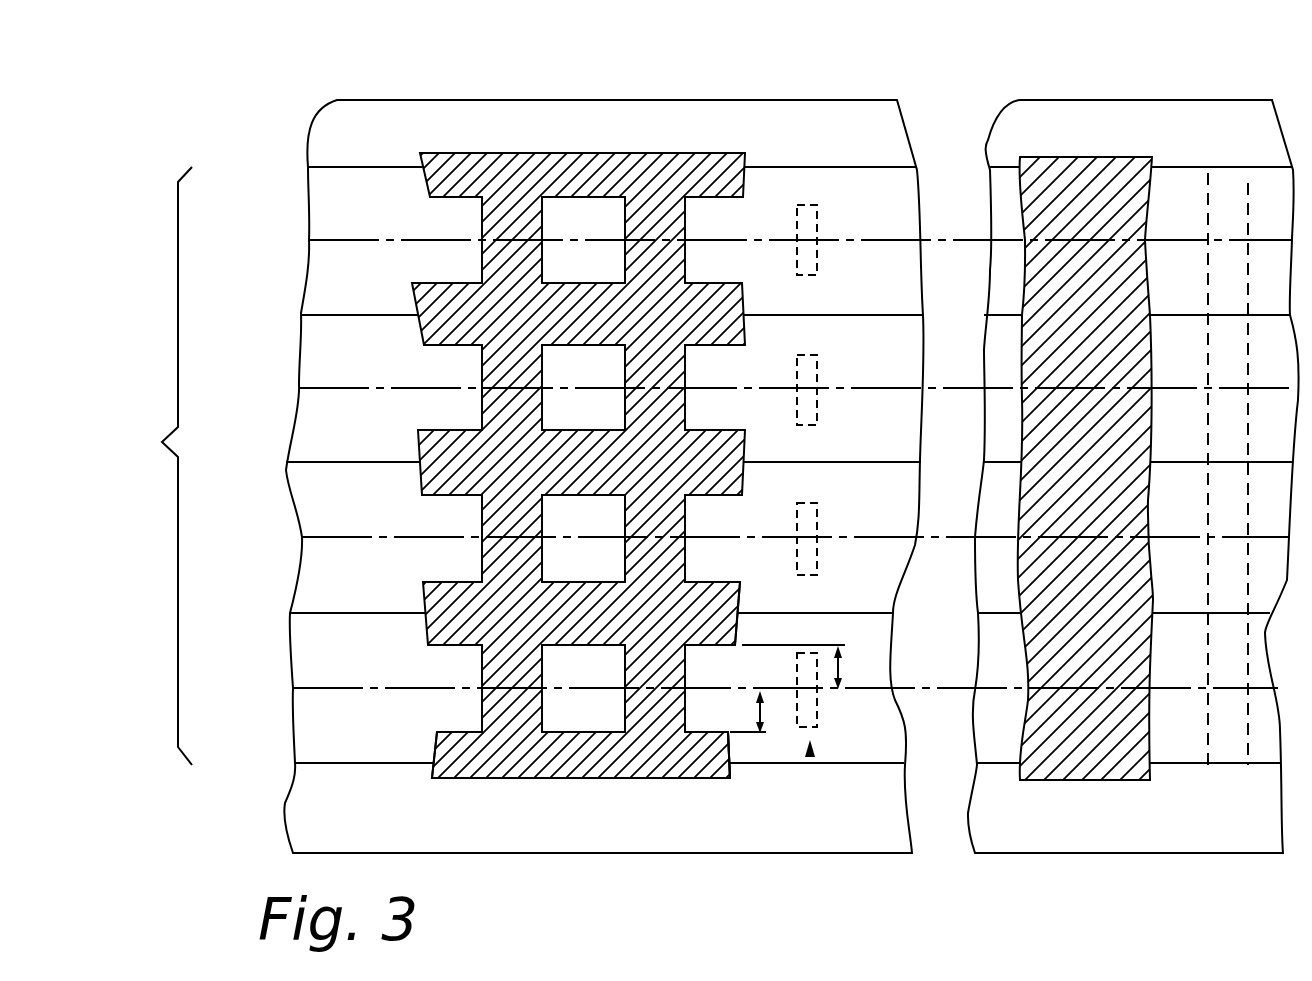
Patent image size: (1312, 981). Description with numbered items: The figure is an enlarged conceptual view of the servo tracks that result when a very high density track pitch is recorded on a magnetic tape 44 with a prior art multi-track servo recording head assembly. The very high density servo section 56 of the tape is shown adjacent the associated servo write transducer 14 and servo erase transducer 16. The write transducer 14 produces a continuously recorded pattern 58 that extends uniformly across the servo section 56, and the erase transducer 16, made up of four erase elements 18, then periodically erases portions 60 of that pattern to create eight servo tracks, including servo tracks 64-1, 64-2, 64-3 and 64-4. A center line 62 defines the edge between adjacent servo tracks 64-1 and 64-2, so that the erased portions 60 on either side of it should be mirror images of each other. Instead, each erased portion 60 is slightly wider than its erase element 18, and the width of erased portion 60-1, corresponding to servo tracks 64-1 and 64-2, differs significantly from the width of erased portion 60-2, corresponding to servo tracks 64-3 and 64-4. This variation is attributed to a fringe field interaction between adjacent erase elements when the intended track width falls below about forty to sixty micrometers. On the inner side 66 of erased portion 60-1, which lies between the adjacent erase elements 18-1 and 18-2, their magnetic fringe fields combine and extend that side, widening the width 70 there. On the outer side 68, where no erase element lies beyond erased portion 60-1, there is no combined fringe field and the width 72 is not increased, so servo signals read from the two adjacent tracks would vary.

The servo write transducer 14 is at (1201, 760).
The servo erase transducer 16 is at (810, 757).
The erase element 18 is at (797, 230).
The erase element 18-1 is at (817, 700).
The erase element 18-2 is at (817, 528).
The magnetic tape 44 is at (880, 98).
The very high density servo section 56 is at (157, 466).
The continuously recorded pattern 58 is at (1093, 778).
The erased portion 60 is at (713, 197).
The erased portion 60-1 is at (578, 732).
The erased portion 60-2 is at (557, 585).
The center line 62 is at (321, 690).
The servo track 64-1 is at (303, 707).
The servo track 64-2 is at (295, 637).
The servo track 64-3 is at (307, 555).
The servo track 64-4 is at (297, 490).
The inner side 66 is at (735, 612).
The outer side 68 is at (712, 735).
The width 70 is at (842, 670).
The width 72 is at (768, 708).